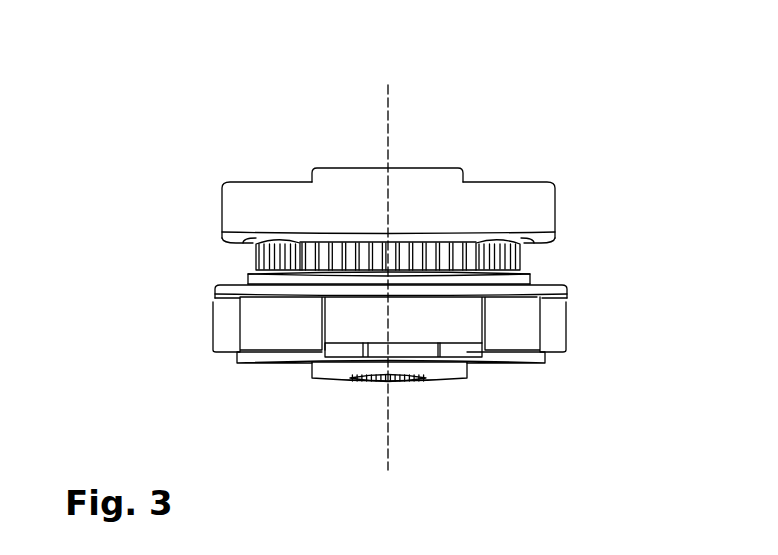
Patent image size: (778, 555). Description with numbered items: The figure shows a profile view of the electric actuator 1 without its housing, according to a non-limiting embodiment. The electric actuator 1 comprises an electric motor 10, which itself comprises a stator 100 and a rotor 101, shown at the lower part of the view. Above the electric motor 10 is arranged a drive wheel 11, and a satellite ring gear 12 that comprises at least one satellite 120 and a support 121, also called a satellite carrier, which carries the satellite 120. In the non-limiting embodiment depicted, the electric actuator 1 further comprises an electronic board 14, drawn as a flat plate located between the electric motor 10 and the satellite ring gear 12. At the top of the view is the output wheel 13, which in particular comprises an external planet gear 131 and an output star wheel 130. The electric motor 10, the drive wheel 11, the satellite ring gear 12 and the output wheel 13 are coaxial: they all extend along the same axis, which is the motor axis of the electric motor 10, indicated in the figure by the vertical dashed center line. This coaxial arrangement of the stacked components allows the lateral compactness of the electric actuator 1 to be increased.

The electric actuator 1 is at (243, 139).
The electric motor 10 is at (86, 336).
The stator 100 is at (290, 319).
The rotor 101 is at (265, 358).
The drive wheel 11 is at (357, 250).
The satellite ring gear 12 is at (670, 223).
The satellite 120 is at (262, 257).
The support 121 is at (540, 285).
The output wheel 13 is at (543, 54).
The output star wheel 130 is at (410, 237).
The external planet gear 131 is at (497, 197).
The electronic board 14 is at (214, 296).